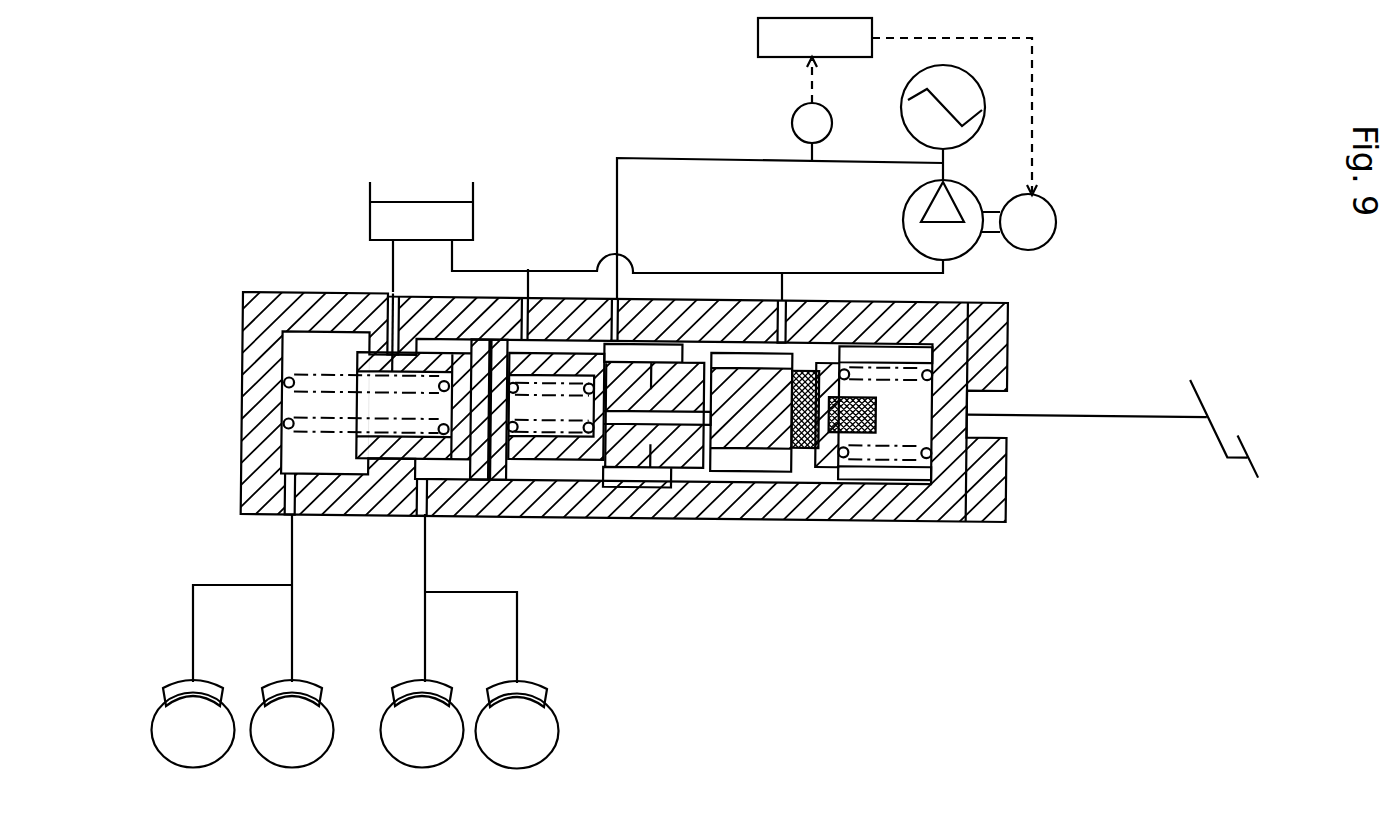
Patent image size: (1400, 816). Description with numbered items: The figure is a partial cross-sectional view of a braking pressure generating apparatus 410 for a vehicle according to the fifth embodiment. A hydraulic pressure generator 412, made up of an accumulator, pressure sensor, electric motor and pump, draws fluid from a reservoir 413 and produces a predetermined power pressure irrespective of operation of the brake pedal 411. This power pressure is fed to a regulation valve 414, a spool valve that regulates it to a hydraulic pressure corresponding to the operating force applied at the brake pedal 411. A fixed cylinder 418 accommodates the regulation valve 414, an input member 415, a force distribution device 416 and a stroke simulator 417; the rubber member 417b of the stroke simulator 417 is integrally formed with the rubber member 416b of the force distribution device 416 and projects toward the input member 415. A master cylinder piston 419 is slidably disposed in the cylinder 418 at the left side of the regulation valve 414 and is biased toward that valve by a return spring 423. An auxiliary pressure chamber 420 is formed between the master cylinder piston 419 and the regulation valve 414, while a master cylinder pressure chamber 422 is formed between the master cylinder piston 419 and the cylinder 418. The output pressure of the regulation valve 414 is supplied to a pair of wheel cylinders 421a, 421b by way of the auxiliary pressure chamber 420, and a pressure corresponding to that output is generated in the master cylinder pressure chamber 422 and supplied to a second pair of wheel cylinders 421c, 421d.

The braking pressure generating apparatus 410 is at (553, 135).
The brake pedal 411 is at (1220, 428).
The hydraulic pressure generator 412 is at (1053, 125).
The reservoir 413 is at (473, 222).
The regulation valve 414 is at (667, 472).
The input member 415 is at (957, 470).
The force distribution device 416 is at (808, 476).
The rubber member 416b is at (782, 472).
The stroke simulator 417 is at (900, 472).
The rubber member 417b is at (862, 480).
The fixed cylinder 418 is at (280, 307).
The master cylinder piston 419 is at (363, 448).
The auxiliary pressure chamber 420 is at (480, 472).
The wheel cylinder 421a is at (417, 690).
The wheel cylinder 421b is at (533, 698).
The wheel cylinder 421c is at (188, 685).
The wheel cylinder 421d is at (298, 692).
The master cylinder pressure chamber 422 is at (295, 352).
The return spring 423 is at (290, 418).